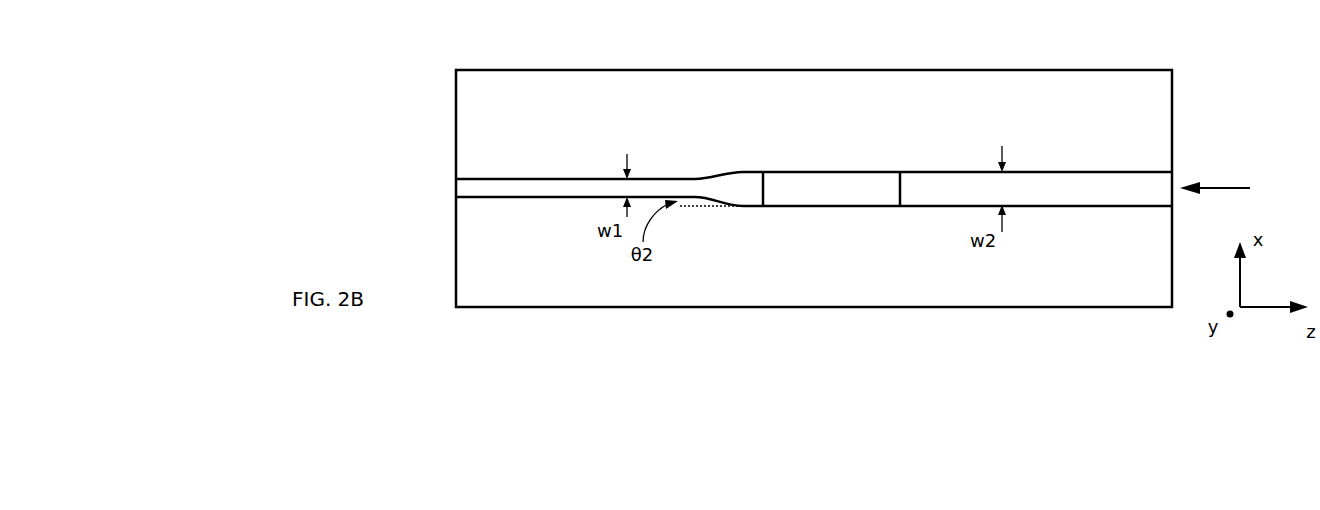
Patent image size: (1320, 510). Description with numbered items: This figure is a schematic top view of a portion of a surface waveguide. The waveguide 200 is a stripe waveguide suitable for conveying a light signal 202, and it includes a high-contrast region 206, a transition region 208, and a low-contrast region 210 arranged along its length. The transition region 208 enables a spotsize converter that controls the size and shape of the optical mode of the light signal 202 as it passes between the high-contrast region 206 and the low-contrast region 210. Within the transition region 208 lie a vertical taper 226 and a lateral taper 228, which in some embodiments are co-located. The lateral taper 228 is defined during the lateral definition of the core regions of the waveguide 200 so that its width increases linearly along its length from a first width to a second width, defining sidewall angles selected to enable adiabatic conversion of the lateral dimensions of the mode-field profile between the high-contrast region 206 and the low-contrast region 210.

The waveguide 200 is at (360, 56).
The light signal 202 is at (1222, 201).
The high-contrast region 206 is at (900, 148).
The transition region 208 is at (695, 148).
The low-contrast region 210 is at (695, 148).
The vertical taper 226 is at (832, 187).
The lateral taper 228 is at (728, 188).